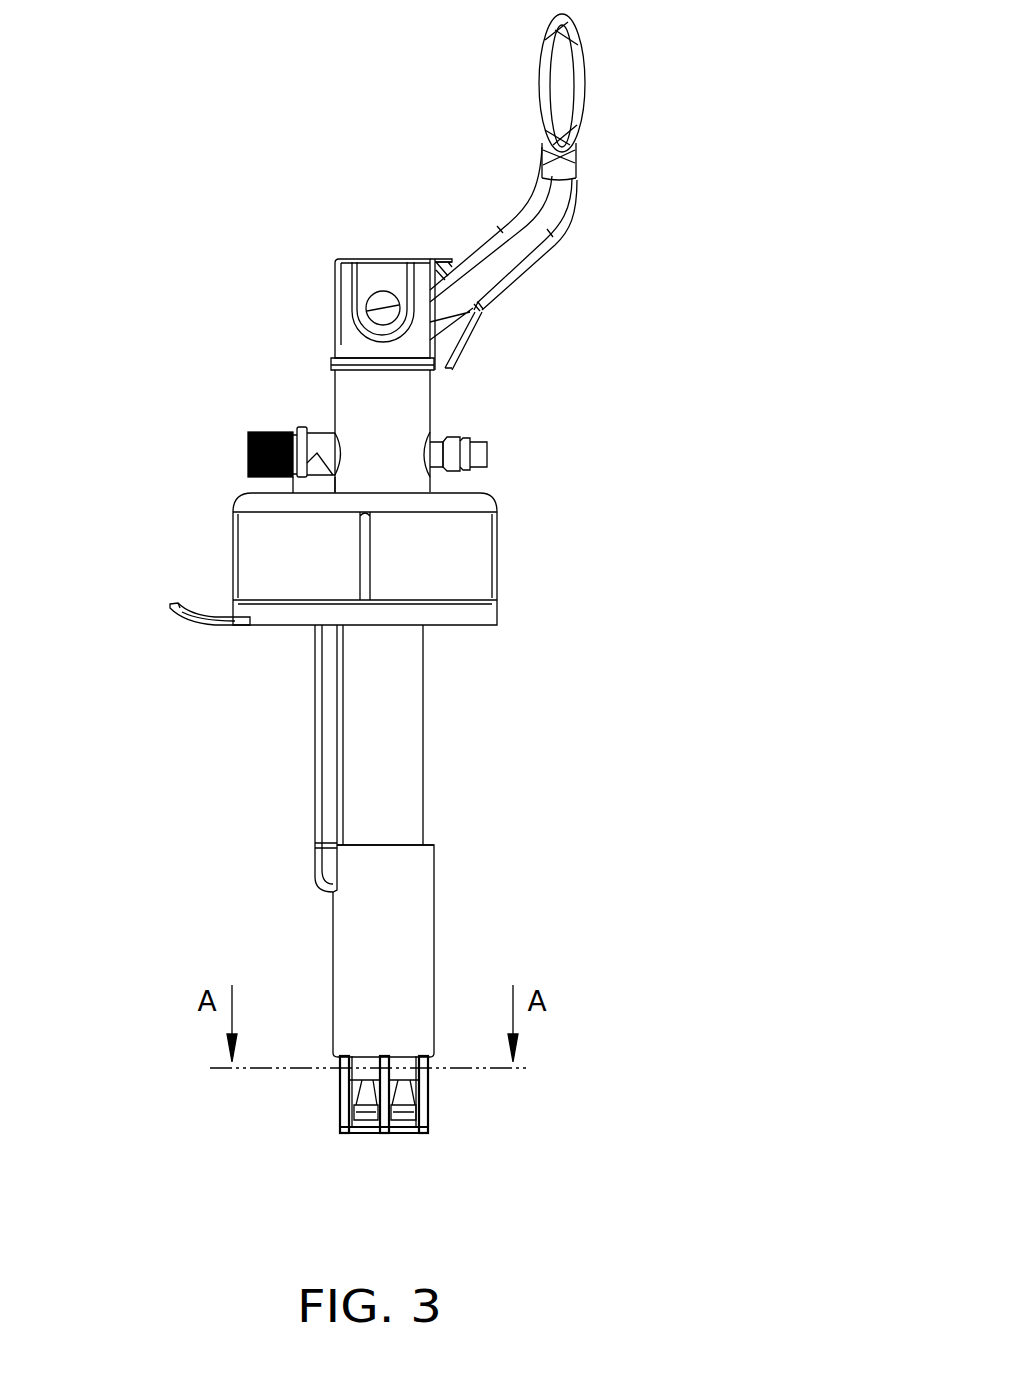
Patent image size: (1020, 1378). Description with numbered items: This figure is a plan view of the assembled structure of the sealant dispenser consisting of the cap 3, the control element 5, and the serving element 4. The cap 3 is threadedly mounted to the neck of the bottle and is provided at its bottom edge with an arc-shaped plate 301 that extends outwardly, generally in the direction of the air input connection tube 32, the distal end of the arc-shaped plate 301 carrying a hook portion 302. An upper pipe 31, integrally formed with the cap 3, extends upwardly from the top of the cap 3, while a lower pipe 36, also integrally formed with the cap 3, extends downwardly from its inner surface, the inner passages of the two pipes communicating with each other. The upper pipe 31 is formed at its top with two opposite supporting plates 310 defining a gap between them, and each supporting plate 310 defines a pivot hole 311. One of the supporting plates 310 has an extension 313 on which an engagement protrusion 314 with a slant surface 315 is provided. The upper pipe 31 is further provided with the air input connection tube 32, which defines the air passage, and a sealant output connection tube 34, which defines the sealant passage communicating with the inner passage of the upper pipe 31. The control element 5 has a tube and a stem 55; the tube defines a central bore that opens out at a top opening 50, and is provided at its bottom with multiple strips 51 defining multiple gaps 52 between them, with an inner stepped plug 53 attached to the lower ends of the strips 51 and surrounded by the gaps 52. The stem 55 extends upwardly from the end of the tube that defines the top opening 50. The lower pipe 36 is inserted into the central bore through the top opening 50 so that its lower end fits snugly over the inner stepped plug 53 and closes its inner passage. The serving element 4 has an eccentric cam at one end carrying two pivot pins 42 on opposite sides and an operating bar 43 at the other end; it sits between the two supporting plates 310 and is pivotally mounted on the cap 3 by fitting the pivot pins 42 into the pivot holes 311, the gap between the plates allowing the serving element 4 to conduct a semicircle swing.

The cap 3 is at (475, 578).
The serving element 4 is at (503, 257).
The control element 5 is at (410, 940).
The upper pipe 31 is at (410, 407).
The air input connection tube 32 is at (250, 432).
The sealant output connection tube 34 is at (466, 465).
The lower pipe 36 is at (398, 748).
The pivot pins 42 is at (380, 298).
The operating bar 43 is at (568, 98).
The top opening 50 is at (435, 845).
The strips 51 is at (348, 1117).
The gaps 52 is at (358, 1092).
The inner stepped plug 53 is at (405, 1130).
The stem 55 is at (328, 747).
The arc-shaped plate 301 is at (215, 622).
The hook portion 302 is at (185, 605).
The supporting plates 310 is at (395, 277).
The pivot hole 311 is at (355, 265).
The extension 313 is at (452, 340).
The engagement protrusion 314 is at (442, 255).
The slant surface 315 is at (430, 262).